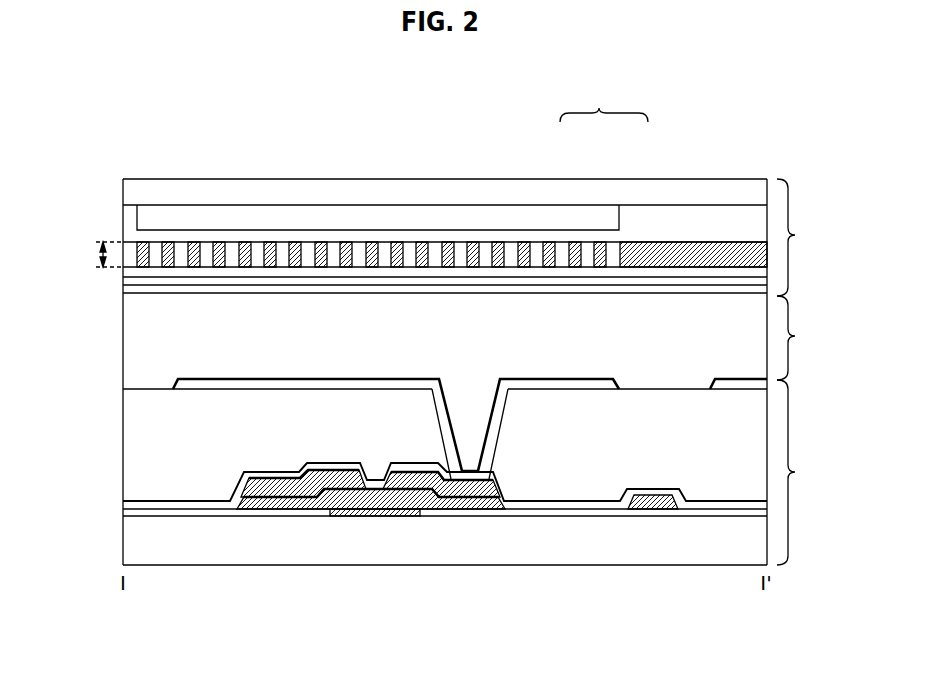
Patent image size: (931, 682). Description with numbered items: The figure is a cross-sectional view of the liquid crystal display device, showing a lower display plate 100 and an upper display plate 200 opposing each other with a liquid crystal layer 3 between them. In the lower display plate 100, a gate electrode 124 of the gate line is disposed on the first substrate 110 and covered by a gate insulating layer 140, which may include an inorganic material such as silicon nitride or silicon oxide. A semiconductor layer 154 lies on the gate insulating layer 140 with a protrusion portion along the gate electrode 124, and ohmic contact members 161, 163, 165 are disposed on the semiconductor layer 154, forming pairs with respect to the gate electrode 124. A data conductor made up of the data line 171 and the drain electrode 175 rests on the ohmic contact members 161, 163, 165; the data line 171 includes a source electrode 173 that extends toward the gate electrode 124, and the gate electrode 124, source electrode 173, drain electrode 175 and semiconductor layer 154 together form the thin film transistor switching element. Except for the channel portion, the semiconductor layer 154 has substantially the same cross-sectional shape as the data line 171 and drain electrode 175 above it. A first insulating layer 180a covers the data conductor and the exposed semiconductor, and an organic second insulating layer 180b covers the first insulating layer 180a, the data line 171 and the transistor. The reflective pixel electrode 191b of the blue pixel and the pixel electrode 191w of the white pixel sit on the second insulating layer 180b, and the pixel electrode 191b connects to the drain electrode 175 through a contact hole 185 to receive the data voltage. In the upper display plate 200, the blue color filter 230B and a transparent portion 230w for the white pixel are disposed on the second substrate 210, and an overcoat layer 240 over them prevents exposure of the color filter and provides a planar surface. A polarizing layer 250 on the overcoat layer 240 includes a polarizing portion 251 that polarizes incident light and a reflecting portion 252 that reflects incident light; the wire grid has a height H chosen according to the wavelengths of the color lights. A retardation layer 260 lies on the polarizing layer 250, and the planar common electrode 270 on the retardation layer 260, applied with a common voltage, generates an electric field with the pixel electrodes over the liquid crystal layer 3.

The upper display plate 200 is at (806, 237).
The second substrate 210 is at (229, 190).
The overcoat layer 240 is at (135, 217).
The blue color filter 230B is at (385, 218).
The transparent portion 230w is at (735, 213).
The retardation layer 260 is at (180, 272).
The polarizing layer 250 is at (604, 102).
The polarizing portion 251 is at (547, 248).
The reflecting portion 252 is at (645, 252).
The height H is at (101, 256).
The common electrode 270 is at (135, 286).
The liquid crystal layer 3 is at (795, 338).
The lower display plate 100 is at (806, 472).
The first substrate 110 is at (527, 547).
The gate electrode 124 is at (373, 517).
The gate insulating layer 140 is at (558, 513).
The semiconductor layer 154 is at (450, 510).
The ohmic contact member 161 is at (288, 494).
The ohmic contact member 163 is at (333, 479).
The ohmic contact member 165 is at (468, 494).
The data line 171 is at (652, 500).
The source electrode 173 is at (347, 489).
The drain electrode 175 is at (410, 481).
The first insulating layer 180a is at (597, 503).
The second insulating layer 180b is at (168, 450).
The contact hole 185 is at (494, 432).
The pixel electrode 191b is at (563, 377).
The pixel electrode 191w is at (737, 387).